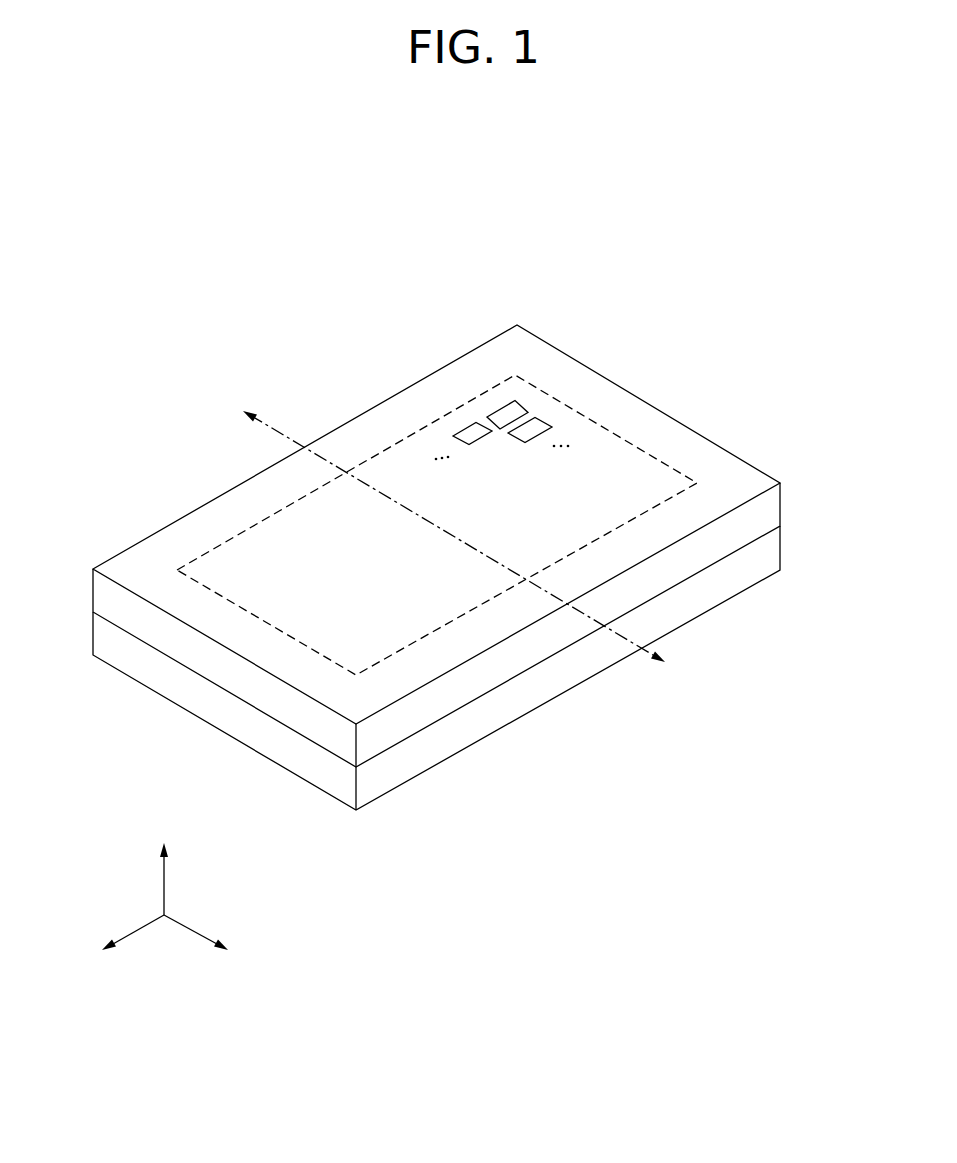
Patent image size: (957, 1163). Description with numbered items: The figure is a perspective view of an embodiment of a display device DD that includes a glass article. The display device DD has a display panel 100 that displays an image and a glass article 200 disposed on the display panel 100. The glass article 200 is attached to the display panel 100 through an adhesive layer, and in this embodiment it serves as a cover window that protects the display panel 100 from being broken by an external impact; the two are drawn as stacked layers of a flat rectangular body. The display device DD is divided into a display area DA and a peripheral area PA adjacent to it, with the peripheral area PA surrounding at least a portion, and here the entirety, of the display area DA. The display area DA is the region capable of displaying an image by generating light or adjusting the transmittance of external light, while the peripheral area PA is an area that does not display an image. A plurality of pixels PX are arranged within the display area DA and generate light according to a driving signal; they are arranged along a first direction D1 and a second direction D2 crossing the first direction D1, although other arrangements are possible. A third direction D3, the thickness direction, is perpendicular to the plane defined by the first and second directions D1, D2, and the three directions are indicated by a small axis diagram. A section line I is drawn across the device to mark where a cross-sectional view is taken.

The display device DD is at (357, 302).
The glass article 200 is at (763, 505).
The display panel 100 is at (763, 548).
The display area DA is at (566, 413).
The peripheral area PA is at (648, 417).
The pixel PX is at (517, 401).
The section line I-I' I is at (463, 536).
The first direction D1 is at (119, 942).
The second direction D2 is at (211, 942).
The third direction D3 is at (164, 863).